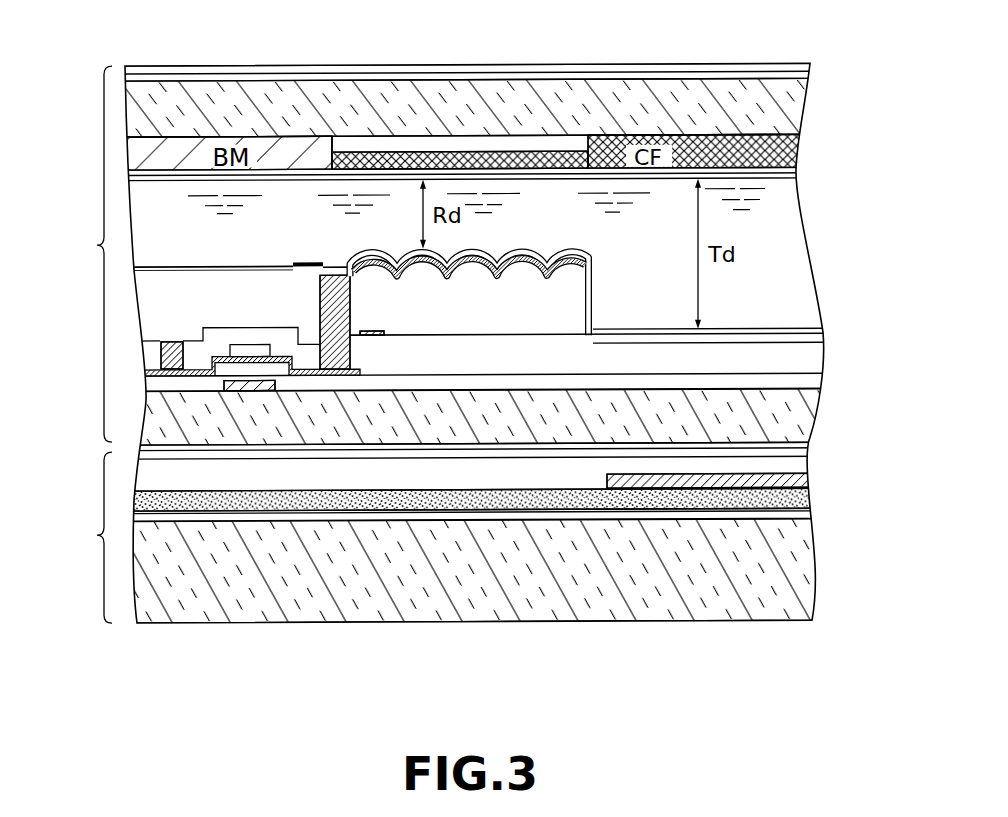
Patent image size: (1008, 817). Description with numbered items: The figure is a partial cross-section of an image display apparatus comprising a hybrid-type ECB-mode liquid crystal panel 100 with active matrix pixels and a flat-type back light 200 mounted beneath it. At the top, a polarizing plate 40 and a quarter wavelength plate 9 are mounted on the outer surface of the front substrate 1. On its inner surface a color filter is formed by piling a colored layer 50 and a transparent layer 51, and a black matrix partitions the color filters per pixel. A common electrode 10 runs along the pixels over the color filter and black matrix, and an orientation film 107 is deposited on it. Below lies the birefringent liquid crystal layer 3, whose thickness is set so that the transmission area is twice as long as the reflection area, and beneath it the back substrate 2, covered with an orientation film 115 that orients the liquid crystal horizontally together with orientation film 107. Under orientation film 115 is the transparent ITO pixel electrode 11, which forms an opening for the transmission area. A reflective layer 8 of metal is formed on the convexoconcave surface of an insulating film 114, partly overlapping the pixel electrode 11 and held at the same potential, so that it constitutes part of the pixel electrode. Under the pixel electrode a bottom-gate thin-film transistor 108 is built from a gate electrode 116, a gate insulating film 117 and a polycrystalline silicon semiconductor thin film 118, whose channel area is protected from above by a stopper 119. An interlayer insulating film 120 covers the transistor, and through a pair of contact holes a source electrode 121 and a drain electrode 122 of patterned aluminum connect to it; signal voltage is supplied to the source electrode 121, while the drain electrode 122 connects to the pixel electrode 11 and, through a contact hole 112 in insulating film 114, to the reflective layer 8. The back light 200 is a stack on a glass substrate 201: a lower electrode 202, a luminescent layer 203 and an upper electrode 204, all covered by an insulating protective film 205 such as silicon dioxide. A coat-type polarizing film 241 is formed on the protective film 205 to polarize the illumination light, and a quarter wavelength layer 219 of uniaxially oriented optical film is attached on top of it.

The front substrate 1 is at (776, 101).
The back substrate 2 is at (800, 427).
The liquid crystal layer 3 is at (790, 275).
The reflective layer 8 is at (524, 258).
The quarter wavelength plate 9 is at (716, 66).
The common electrode 10 is at (796, 176).
The pixel electrode 11 is at (806, 340).
The polarizing plate 40 is at (583, 75).
The colored layer 50 is at (434, 152).
The transparent layer 51 is at (497, 150).
The liquid crystal panel 100 is at (79, 254).
The orientation film 107 is at (797, 184).
The thin-film transistor 108 is at (229, 405).
The contact hole 112 is at (356, 308).
The insulating film 114 is at (575, 303).
The orientation film 115 is at (806, 328).
The gate electrode 116 is at (257, 392).
The gate insulating film 117 is at (810, 380).
The semiconductor thin film 118 is at (314, 376).
The stopper 119 is at (248, 346).
The interlayer insulating film 120 is at (806, 357).
The source electrode 121 is at (178, 340).
The drain electrode 122 is at (348, 356).
The flat-type back light 200 is at (79, 537).
The substrate 201 is at (792, 589).
The lower electrode 202 is at (805, 517).
The luminescent layer 203 is at (805, 498).
The upper electrode 204 is at (640, 482).
The insulating protective film 205 is at (572, 470).
The quarter wavelength layer 219 is at (803, 452).
The polarizing film 241 is at (807, 479).